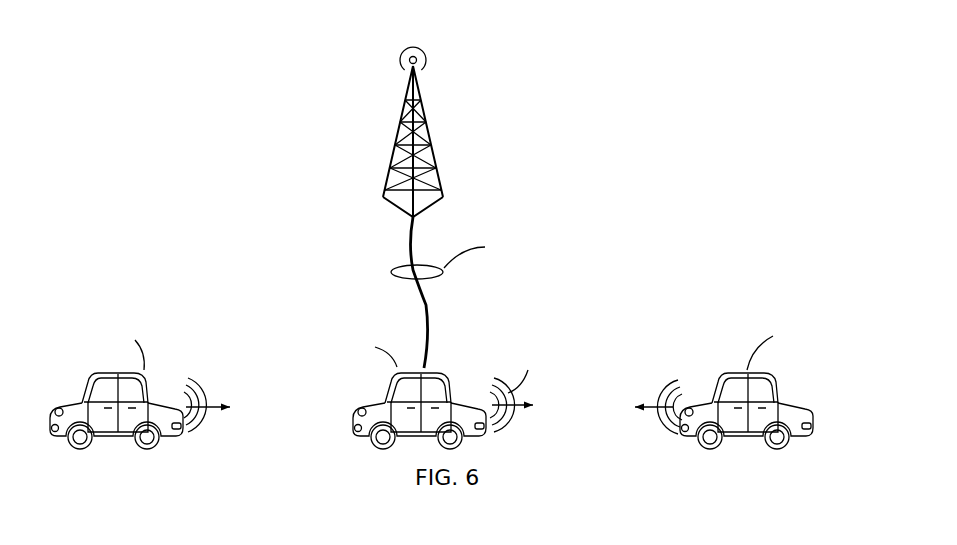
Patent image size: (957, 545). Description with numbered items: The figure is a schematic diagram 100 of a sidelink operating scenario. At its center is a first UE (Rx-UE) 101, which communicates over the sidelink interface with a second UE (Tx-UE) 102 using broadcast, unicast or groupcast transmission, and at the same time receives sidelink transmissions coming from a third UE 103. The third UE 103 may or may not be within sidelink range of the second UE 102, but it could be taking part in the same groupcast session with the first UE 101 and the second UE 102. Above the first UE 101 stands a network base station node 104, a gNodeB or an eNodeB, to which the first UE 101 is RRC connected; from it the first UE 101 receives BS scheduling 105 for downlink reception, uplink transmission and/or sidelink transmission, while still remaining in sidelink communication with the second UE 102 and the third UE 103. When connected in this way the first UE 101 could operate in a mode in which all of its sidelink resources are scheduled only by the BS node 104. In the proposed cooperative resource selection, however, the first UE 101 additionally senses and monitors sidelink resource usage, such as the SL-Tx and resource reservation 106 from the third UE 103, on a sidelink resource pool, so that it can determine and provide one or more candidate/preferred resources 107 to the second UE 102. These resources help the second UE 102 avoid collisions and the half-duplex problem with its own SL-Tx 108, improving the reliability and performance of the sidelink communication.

The diagram 100 is at (233, 110).
The first UE (Rx-UE) 101 is at (334, 320).
The second UE (Tx-UE) 102 is at (792, 308).
The third UE 103 is at (108, 308).
The base station (BS) node 104 is at (447, 42).
The BS scheduling 105 is at (528, 218).
The SL-Tx and resource reservation 106 is at (210, 366).
The candidate/preferred resources 107 is at (577, 318).
The SL-Tx 108 is at (637, 363).